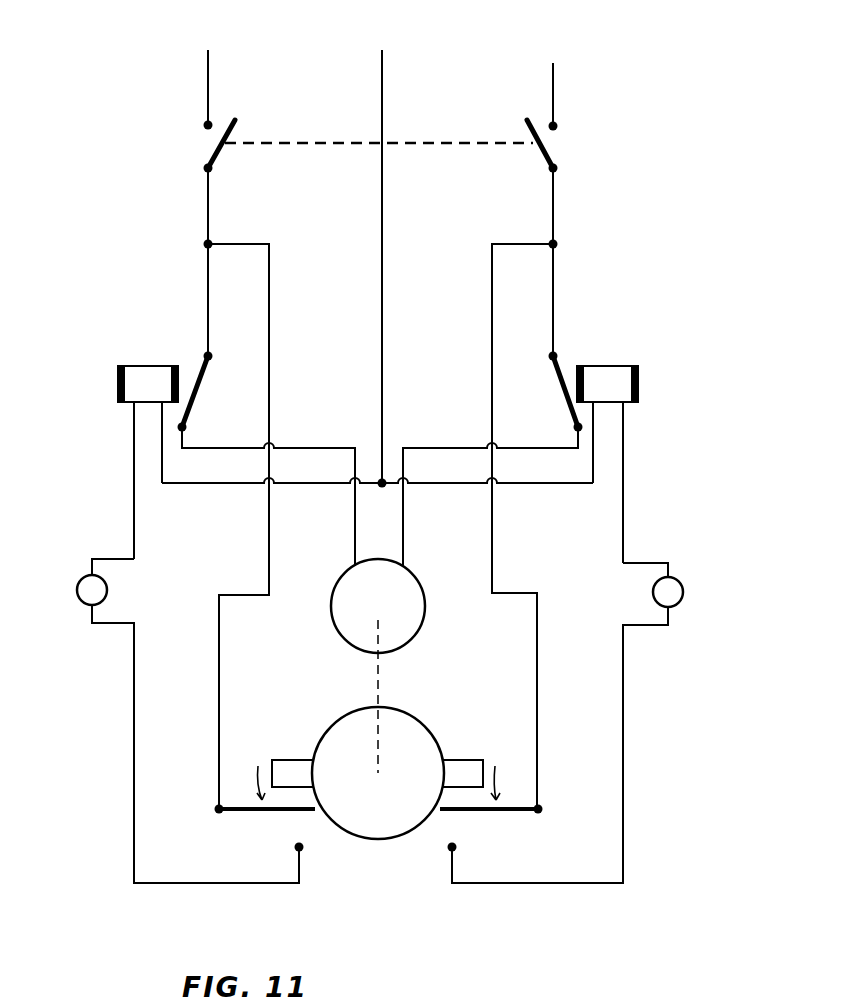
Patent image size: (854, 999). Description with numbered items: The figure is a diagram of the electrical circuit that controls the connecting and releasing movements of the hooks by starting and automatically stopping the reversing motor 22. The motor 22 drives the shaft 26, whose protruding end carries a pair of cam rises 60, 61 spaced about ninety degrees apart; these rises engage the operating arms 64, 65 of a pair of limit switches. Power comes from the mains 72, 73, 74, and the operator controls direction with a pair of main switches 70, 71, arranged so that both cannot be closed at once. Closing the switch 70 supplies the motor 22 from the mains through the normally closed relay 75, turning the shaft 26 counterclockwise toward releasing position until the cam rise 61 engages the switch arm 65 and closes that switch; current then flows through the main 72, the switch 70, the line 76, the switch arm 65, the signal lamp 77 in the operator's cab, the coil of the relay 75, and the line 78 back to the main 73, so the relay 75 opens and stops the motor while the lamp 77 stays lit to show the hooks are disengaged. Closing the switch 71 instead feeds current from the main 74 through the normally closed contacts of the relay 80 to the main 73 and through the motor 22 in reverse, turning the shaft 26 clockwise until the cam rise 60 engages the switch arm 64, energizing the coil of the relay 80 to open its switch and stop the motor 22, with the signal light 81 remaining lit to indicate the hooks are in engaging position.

The motor 22 is at (418, 580).
The shaft 26 is at (413, 714).
The cam rise 60 is at (468, 760).
The cam rise 61 is at (282, 760).
The operating arm 64 is at (470, 812).
The operating arm 65 is at (272, 812).
The main switch 70 is at (229, 114).
The main switch 71 is at (563, 138).
The main 72 is at (208, 58).
The main 73 is at (382, 60).
The main 74 is at (553, 72).
The relay 75 is at (168, 339).
The line 76 is at (270, 364).
The signal lamp 77 is at (76, 588).
The line 78 is at (297, 486).
The relay 80 is at (588, 357).
The signal light 81 is at (680, 584).